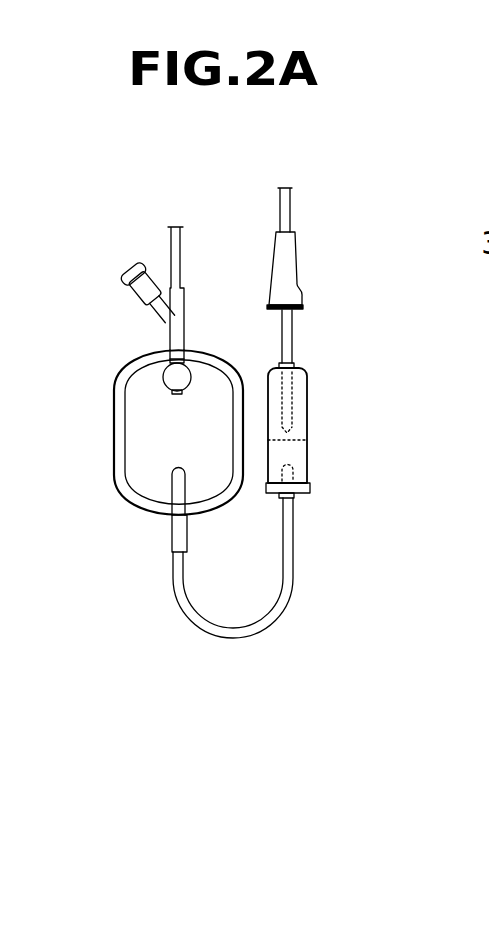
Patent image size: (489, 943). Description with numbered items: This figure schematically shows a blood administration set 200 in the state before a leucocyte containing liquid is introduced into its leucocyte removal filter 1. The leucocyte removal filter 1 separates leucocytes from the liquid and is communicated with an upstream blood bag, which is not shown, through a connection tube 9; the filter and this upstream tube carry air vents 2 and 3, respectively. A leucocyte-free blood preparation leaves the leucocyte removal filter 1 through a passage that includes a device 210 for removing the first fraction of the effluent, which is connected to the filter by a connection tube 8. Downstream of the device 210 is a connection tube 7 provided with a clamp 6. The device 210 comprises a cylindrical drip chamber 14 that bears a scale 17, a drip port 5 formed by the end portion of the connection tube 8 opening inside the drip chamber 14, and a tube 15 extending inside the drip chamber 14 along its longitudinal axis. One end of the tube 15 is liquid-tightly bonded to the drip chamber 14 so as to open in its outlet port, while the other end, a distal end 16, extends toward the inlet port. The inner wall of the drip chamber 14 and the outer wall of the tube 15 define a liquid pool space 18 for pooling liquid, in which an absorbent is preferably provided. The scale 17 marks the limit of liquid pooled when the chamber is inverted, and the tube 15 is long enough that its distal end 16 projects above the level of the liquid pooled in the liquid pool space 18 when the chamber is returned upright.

The leucocyte removal filter 1 is at (120, 455).
The air vent 2 is at (163, 380).
The air vent 3 is at (117, 277).
The drip port 5 is at (322, 511).
The clamp 6 is at (295, 275).
The connection tube 7 is at (290, 327).
The connection tube 8 is at (290, 605).
The connection tube 9 is at (180, 246).
The drip chamber 14 is at (307, 457).
The tube 15 is at (308, 390).
The distal end 16 is at (308, 433).
The scale 17 is at (307, 450).
The liquid pool space 18 is at (300, 407).
The blood administration set 200 is at (228, 676).
The device for removing the first fraction 210 is at (374, 450).